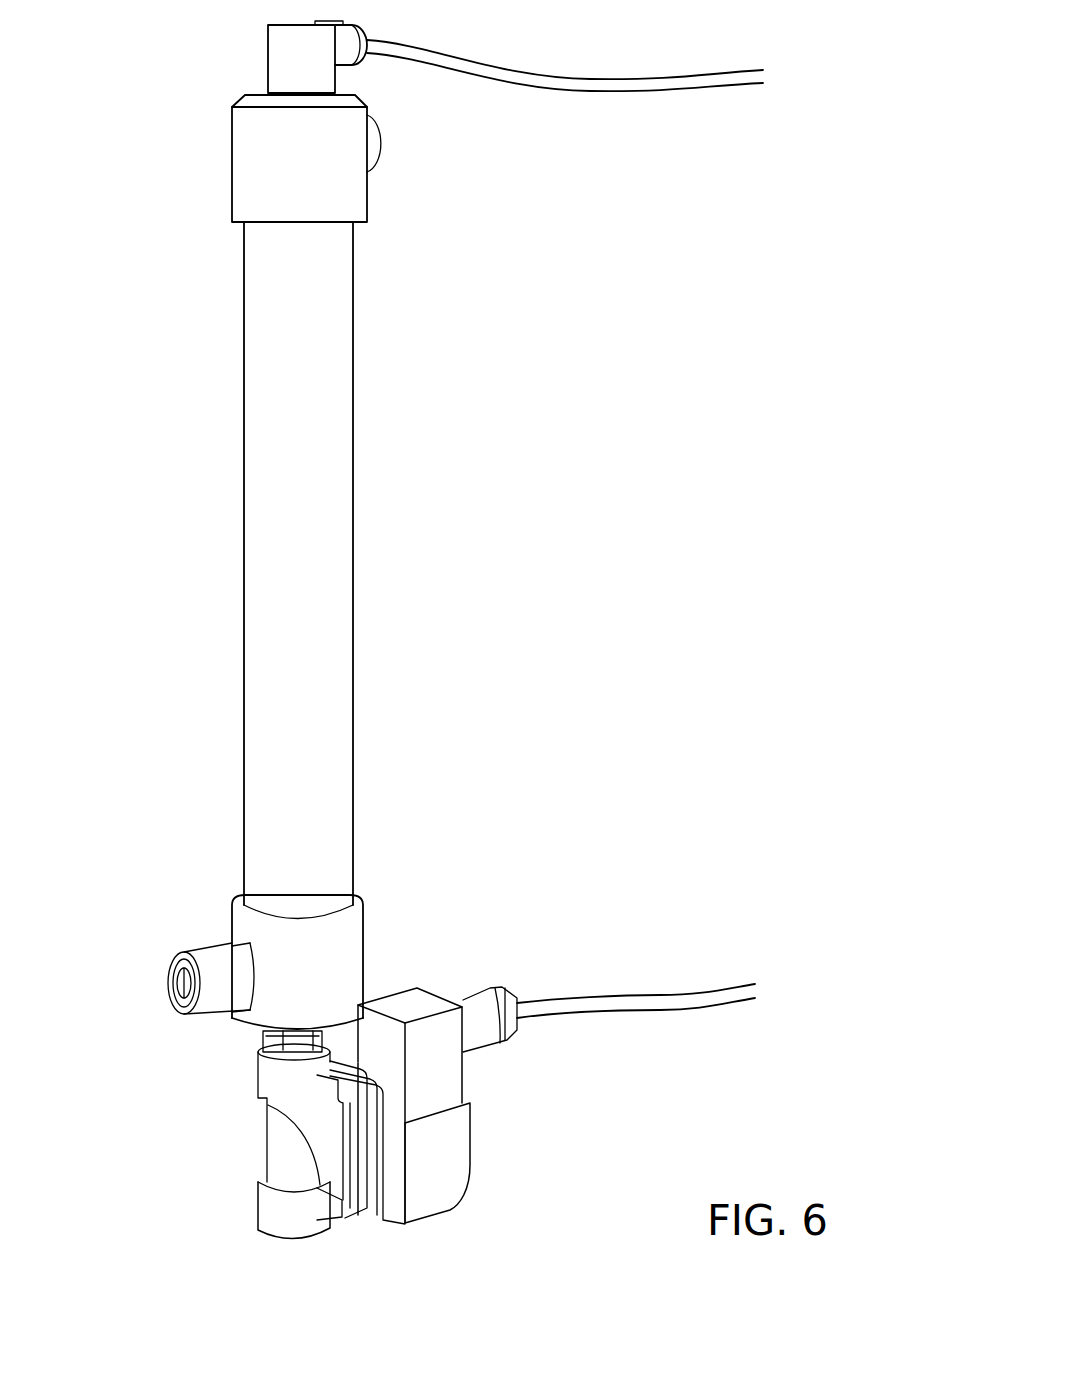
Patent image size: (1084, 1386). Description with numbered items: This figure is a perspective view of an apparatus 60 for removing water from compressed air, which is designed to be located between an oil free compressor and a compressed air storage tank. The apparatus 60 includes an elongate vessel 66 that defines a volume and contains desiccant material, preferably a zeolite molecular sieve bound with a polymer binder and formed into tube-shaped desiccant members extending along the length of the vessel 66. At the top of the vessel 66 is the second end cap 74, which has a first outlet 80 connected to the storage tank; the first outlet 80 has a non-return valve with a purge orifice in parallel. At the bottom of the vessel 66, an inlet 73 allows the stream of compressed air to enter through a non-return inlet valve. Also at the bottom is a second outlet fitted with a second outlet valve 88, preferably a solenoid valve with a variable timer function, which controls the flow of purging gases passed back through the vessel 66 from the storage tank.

The apparatus 60 is at (403, 516).
The vessel 66 is at (244, 444).
The inlet 73 is at (167, 985).
The second end cap 74 is at (258, 158).
The first outlet 80 is at (385, 144).
The second outlet valve 88 is at (278, 1150).